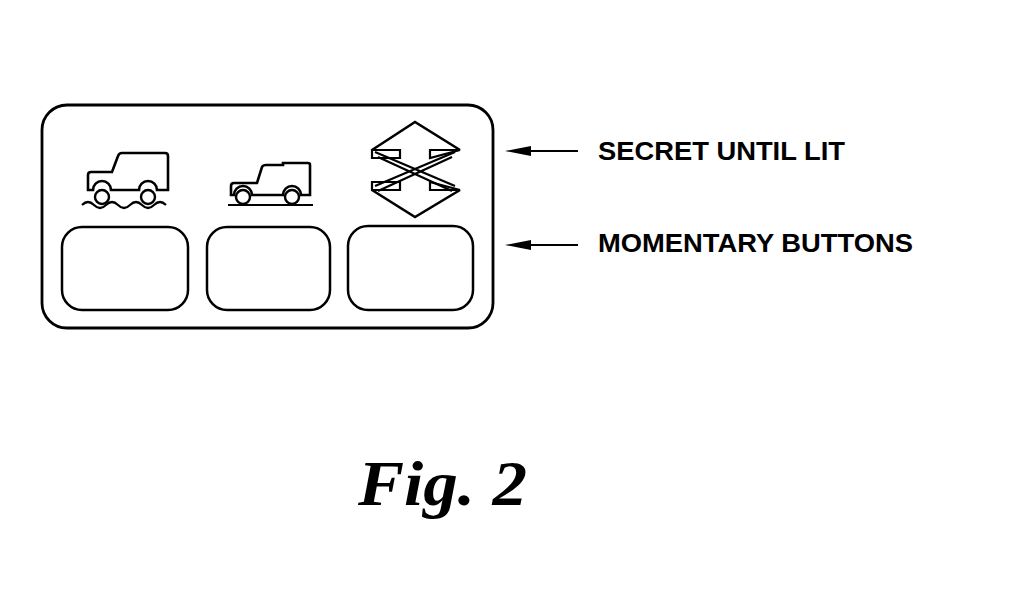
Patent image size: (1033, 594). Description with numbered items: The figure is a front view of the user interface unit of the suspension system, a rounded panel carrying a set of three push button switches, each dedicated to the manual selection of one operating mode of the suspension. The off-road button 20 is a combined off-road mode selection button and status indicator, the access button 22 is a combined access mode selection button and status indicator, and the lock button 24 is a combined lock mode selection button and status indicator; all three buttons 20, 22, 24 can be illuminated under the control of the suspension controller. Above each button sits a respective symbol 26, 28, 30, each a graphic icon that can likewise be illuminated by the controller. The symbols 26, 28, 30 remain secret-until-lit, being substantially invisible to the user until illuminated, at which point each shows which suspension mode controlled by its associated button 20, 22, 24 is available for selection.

The off-road button 20 is at (132, 295).
The access button 22 is at (278, 295).
The lock button 24 is at (413, 295).
The symbol 26 is at (112, 170).
The symbol 28 is at (270, 167).
The symbol 30 is at (387, 140).